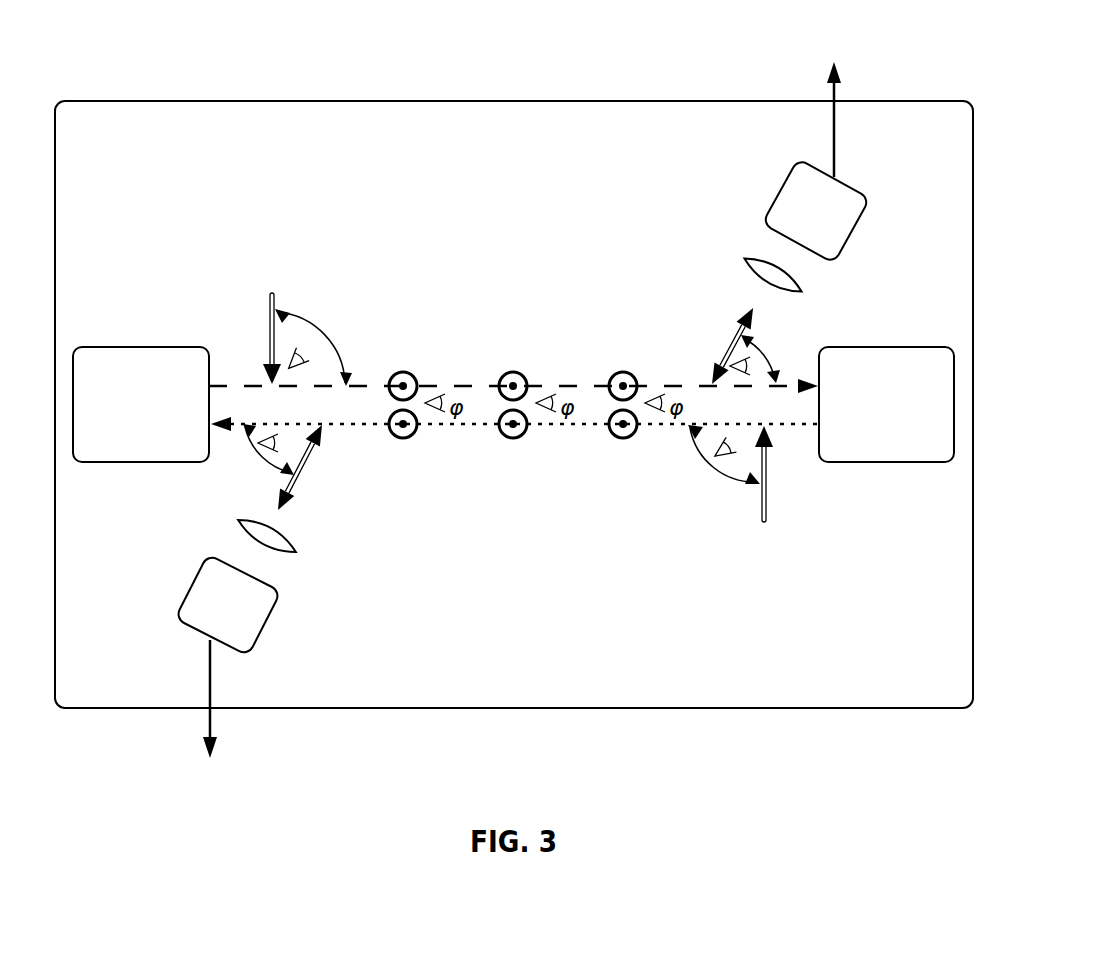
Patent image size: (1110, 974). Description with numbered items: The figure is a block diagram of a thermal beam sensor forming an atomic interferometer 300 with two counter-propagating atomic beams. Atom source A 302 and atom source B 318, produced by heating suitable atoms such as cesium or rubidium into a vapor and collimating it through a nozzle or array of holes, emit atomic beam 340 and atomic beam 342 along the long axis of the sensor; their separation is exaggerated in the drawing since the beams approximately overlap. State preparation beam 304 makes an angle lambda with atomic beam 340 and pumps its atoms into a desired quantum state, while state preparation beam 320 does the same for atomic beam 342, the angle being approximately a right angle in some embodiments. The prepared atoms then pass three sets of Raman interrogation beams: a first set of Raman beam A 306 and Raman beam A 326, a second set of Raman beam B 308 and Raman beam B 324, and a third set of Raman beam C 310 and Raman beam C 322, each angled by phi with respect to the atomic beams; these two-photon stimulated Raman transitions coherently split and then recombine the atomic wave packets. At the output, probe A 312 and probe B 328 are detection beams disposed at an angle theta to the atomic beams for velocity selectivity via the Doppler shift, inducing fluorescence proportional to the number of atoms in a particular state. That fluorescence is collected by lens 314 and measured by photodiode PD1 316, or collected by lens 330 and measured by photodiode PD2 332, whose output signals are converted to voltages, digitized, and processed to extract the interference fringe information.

The atomic interferometer 300 is at (128, 100).
The atom source A 302 is at (148, 347).
The state preparation beam 304 is at (273, 296).
The Raman beam A 306 is at (396, 372).
The Raman beam B 308 is at (506, 372).
The Raman beam C 310 is at (616, 372).
The probe A 312 is at (753, 308).
The lens 314 is at (756, 259).
The photodiode PD1 316 is at (771, 191).
The atom source B 318 is at (893, 347).
The state preparation beam 320 is at (763, 522).
The Raman beam C 322 is at (616, 438).
The Raman beam B 324 is at (506, 438).
The Raman beam A 326 is at (396, 438).
The probe B 328 is at (292, 482).
The lens 330 is at (240, 522).
The photodiode PD2 332 is at (188, 580).
The atomic beam 340 is at (222, 384).
The atomic beam 342 is at (806, 428).